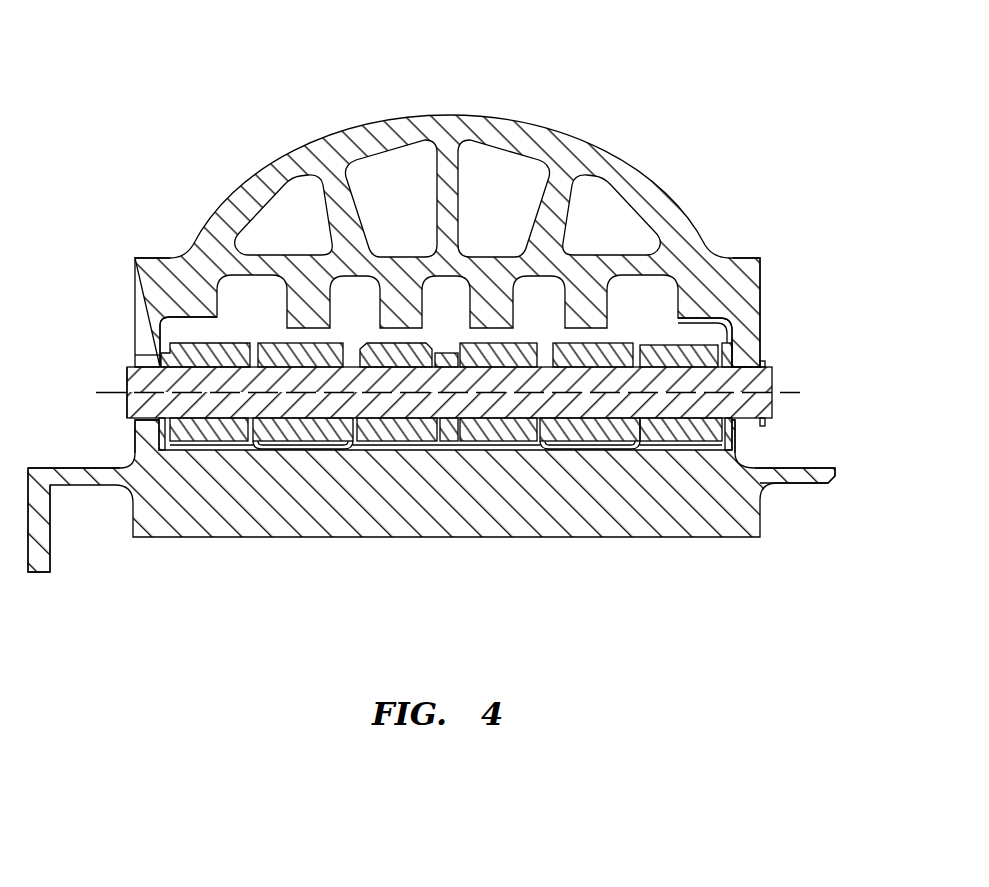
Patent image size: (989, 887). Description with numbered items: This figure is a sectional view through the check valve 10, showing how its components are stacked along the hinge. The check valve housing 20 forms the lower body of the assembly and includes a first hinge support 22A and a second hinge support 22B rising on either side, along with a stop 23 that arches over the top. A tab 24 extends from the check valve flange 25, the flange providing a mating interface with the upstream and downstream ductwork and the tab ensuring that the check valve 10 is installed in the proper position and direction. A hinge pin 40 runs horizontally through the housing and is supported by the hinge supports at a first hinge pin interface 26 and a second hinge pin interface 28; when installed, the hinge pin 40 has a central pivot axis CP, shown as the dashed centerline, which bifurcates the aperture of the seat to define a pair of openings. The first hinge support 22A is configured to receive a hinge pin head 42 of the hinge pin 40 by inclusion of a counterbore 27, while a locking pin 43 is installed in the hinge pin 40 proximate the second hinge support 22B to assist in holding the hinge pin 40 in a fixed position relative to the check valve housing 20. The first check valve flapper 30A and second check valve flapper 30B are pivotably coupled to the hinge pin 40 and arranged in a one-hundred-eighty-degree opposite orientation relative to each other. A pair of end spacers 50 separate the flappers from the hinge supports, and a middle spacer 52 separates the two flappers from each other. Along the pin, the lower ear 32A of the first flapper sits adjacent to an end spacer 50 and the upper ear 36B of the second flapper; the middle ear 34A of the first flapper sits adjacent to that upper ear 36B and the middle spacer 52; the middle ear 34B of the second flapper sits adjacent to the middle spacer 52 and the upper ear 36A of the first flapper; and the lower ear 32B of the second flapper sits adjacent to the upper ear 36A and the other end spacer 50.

The check valve 10 is at (157, 80).
The check valve housing 20 is at (739, 542).
The first hinge support 22A is at (131, 305).
The second hinge support 22B is at (753, 330).
The stop 23 is at (664, 190).
The tab 24 is at (49, 550).
The check valve flange 25 is at (813, 489).
The first hinge pin interface 26 is at (145, 426).
The counterbore 27 is at (131, 350).
The second hinge pin interface 28 is at (748, 427).
The first check valve flapper 30A is at (191, 337).
The second check valve flapper 30B is at (265, 337).
The lower ear 32A is at (218, 438).
The lower ear 32B is at (653, 440).
The middle ear 34A is at (389, 438).
The middle ear 34B is at (503, 440).
The upper ear 36A is at (577, 440).
The upper ear 36B is at (302, 437).
The hinge pin 40 is at (609, 373).
The hinge pin head 42 is at (124, 373).
The locking pin 43 is at (777, 423).
The end spacers 50 is at (164, 445).
The middle spacer 52 is at (447, 438).
The central pivot axis CP is at (432, 393).